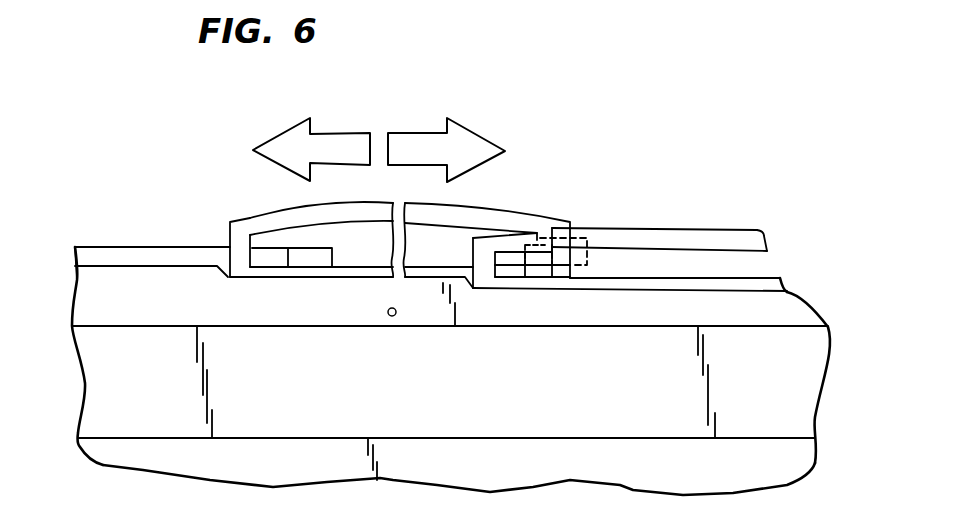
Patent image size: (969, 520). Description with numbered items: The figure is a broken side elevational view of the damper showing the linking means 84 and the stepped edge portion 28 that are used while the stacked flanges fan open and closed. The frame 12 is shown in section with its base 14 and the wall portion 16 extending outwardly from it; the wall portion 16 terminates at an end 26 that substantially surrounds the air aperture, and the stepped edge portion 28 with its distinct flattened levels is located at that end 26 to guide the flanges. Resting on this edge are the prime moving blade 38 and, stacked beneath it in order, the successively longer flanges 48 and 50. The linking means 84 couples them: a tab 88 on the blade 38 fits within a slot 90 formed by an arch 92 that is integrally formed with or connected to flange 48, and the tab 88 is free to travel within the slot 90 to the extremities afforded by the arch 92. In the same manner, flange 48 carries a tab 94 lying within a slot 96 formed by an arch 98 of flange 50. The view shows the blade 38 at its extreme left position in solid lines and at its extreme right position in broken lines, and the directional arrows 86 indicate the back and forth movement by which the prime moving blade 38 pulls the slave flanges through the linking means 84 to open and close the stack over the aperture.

The frame 12 is at (844, 324).
The base 14 is at (788, 460).
The wall portion 16 is at (780, 398).
The end 26 is at (95, 326).
The stepped edge portion 28 is at (167, 293).
The blade 38 is at (137, 257).
The flange 48 is at (425, 242).
The flange 50 is at (733, 284).
The linking means 84 is at (534, 148).
The directional arrows 86 is at (328, 133).
The tab 88 is at (263, 253).
The slot 90 is at (352, 245).
The arch 92 is at (540, 256).
The tab 94 is at (508, 270).
The slot 96 is at (690, 263).
The arch 98 is at (755, 241).